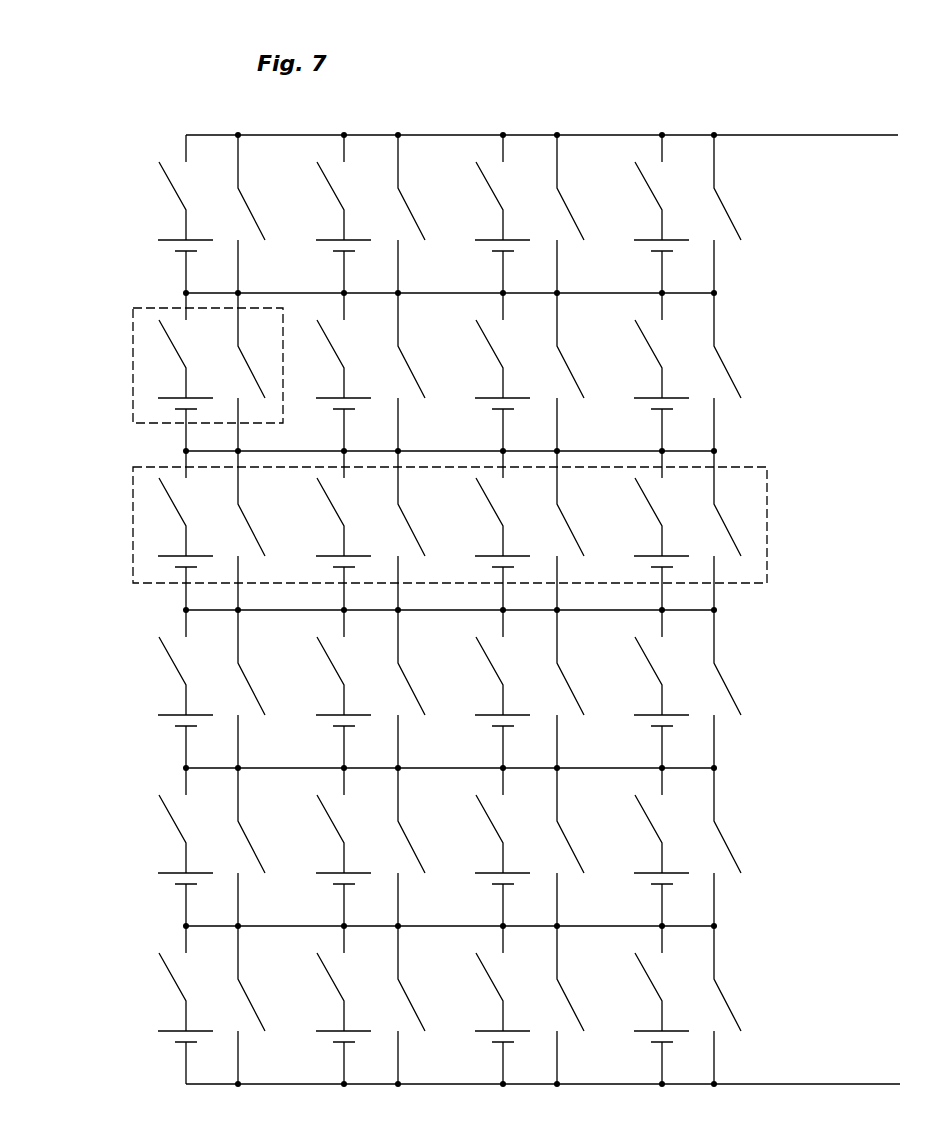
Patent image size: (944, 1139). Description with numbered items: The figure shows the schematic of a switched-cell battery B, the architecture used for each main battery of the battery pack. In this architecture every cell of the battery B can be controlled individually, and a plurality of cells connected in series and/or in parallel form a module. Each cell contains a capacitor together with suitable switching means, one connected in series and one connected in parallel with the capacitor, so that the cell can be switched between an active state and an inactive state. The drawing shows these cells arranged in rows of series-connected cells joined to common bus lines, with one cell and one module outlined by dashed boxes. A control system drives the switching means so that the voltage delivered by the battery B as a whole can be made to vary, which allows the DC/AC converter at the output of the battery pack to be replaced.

The battery B is at (160, 93).